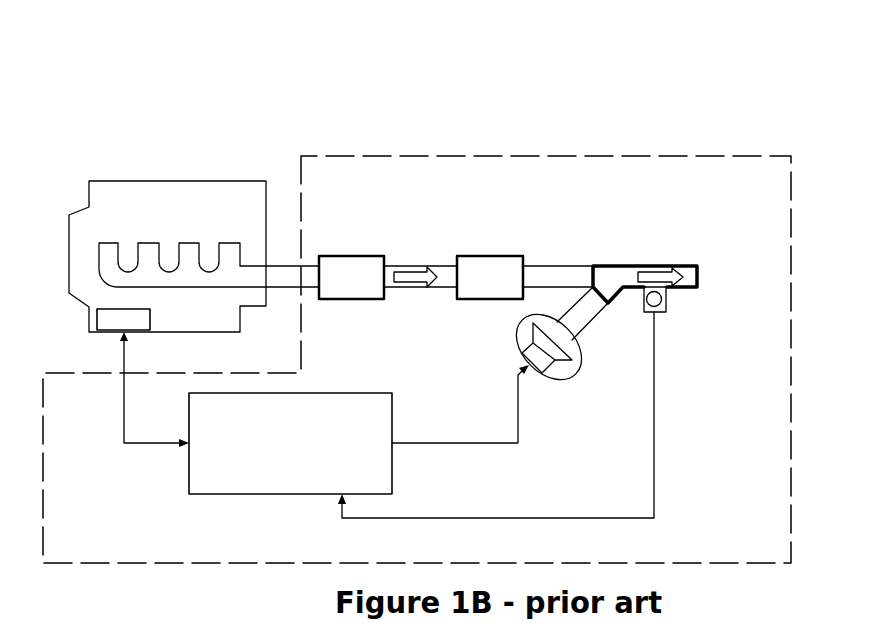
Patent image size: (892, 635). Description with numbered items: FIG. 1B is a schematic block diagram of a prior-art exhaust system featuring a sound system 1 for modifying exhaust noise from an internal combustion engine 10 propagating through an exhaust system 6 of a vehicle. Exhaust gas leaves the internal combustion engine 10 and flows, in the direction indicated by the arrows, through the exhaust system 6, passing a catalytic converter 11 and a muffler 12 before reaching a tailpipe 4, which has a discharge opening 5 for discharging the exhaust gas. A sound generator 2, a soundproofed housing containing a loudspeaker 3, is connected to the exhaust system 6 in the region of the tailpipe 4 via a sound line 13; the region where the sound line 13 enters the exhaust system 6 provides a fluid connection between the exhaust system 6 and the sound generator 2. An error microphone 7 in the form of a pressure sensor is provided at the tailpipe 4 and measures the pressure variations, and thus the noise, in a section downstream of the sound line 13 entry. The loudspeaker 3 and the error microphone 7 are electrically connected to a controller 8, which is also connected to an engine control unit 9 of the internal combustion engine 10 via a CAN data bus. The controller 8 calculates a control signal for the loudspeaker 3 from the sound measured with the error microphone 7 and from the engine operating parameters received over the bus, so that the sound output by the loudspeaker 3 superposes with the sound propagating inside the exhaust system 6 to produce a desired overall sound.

The sound system 1 is at (583, 156).
The sound generator 2 is at (573, 372).
The loudspeaker 3 is at (545, 373).
The tailpipe 4 is at (628, 266).
The discharge opening 5 is at (698, 275).
The exhaust system 6 is at (543, 266).
The error microphone 7 is at (660, 305).
The controller 8 is at (330, 476).
The engine control unit 9 is at (119, 319).
The internal combustion engine 10 is at (231, 203).
The catalytic converter 11 is at (350, 256).
The muffler 12 is at (490, 256).
The sound line 13 is at (585, 321).